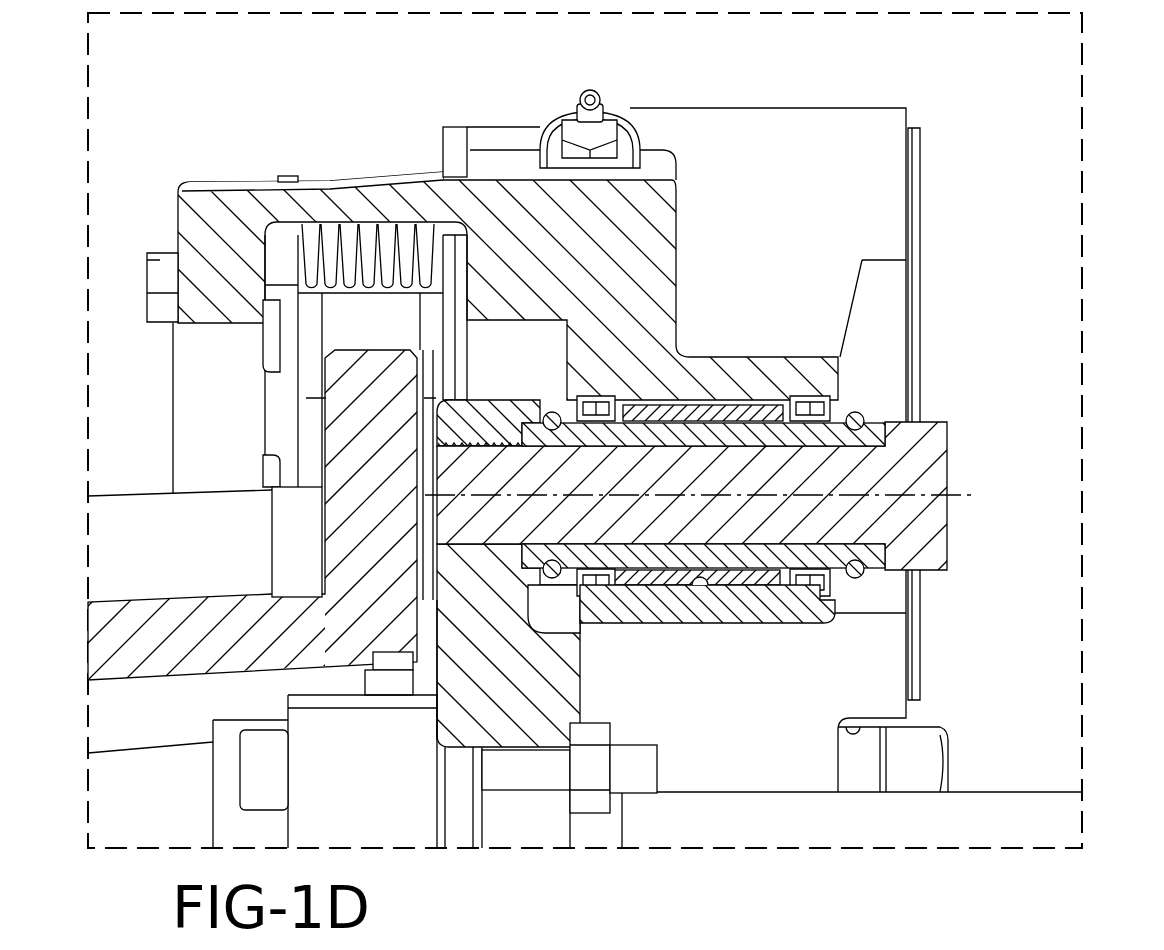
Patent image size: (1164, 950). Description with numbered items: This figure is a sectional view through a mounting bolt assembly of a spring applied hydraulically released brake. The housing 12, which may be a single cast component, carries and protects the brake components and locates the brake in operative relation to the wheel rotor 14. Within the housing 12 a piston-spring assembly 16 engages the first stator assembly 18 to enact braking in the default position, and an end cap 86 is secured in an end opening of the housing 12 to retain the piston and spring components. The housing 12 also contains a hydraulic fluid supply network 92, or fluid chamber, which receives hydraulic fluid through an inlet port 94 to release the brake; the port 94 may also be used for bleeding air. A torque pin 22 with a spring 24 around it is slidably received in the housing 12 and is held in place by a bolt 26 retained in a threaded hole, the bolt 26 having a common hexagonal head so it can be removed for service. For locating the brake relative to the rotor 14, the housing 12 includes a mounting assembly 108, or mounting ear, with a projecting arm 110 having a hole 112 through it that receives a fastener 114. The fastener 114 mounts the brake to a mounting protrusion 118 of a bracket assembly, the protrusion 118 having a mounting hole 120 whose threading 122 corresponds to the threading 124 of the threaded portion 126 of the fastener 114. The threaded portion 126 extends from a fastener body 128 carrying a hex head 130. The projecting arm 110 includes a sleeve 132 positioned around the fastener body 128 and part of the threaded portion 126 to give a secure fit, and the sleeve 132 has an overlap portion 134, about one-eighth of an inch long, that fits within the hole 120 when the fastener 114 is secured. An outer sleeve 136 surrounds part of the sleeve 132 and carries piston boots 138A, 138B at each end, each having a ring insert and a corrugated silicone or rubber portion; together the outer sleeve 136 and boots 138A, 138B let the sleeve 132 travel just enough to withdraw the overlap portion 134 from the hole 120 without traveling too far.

The housing 12 is at (774, 136).
The wheel rotor 14 is at (345, 400).
The piston-spring assembly 16 is at (832, 219).
The first stator assembly 18 is at (458, 242).
The torque pin 22 is at (360, 265).
The spring 24 is at (425, 263).
The bolt 26 is at (155, 278).
The end cap 86 is at (925, 155).
The hydraulic fluid supply network 92 is at (640, 128).
The inlet port 94 is at (580, 106).
The mounting assembly 108 is at (840, 630).
The projecting arm 110 is at (652, 598).
The hole 112 is at (716, 588).
The fastener 114 is at (963, 558).
The mounting protrusion 118 is at (520, 680).
The mounting hole 120 is at (470, 463).
The threading 122 is at (462, 517).
The threading 124 is at (447, 614).
The threaded portion 126 is at (645, 510).
The fastener body 128 is at (727, 505).
The hex head 130 is at (925, 507).
The sleeve 132 is at (762, 440).
The overlap portion 134 is at (518, 584).
The outer sleeve 136 is at (781, 350).
The piston boot 138A is at (600, 398).
The piston boot 138B is at (832, 410).